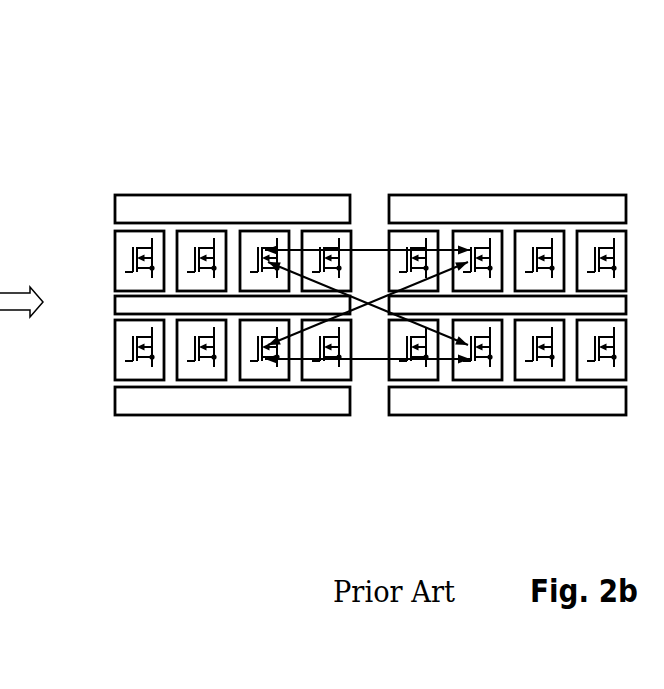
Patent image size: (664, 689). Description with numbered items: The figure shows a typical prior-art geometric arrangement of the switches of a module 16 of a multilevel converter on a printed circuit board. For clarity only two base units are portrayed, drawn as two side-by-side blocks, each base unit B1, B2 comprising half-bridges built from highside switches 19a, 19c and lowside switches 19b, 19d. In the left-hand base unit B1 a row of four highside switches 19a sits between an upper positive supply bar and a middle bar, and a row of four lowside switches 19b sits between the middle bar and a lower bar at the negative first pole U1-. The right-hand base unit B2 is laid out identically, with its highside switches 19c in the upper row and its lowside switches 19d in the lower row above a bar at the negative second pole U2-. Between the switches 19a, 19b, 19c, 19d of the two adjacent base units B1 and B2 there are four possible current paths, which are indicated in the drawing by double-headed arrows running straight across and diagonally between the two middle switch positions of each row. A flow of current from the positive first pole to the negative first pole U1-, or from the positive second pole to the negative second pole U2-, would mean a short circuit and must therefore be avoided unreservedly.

The module 16 is at (213, 110).
The highside switches 19a is at (115, 252).
The lowside switches 19b is at (115, 357).
The highside switches 19c is at (428, 231).
The lowside switches 19d is at (430, 379).
The base unit B1 is at (221, 495).
The base unit B2 is at (494, 497).
The negative first pole U1- is at (140, 403).
The negative second pole U2- is at (415, 403).